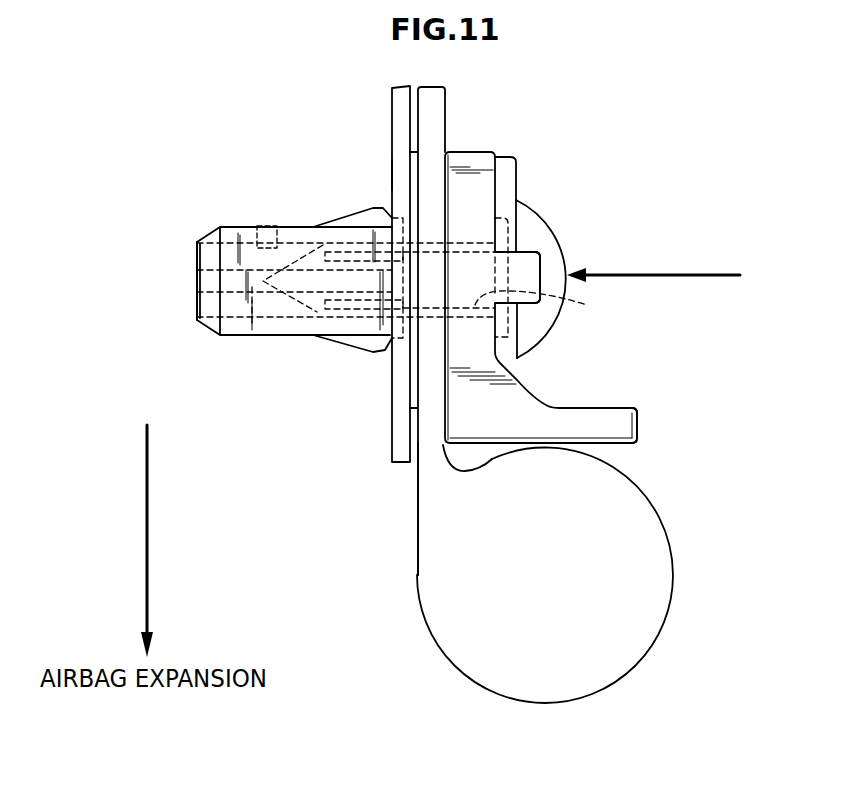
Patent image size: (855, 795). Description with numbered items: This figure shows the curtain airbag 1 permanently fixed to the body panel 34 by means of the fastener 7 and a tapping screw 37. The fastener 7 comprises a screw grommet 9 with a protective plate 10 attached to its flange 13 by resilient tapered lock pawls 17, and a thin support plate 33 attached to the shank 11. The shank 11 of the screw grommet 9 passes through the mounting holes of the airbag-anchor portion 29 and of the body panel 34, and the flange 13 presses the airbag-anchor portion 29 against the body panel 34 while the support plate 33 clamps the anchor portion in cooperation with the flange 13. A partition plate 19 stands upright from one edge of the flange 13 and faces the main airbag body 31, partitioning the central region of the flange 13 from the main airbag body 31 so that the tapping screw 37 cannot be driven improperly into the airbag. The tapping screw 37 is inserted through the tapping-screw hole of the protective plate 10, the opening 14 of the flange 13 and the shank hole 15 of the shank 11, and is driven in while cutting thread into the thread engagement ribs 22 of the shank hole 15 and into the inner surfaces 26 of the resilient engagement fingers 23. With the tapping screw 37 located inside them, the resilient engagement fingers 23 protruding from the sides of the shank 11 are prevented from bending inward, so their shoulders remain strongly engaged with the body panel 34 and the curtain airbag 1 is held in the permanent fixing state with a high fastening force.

The curtain airbag 1 is at (688, 544).
The fastener 7 is at (632, 335).
The screw grommet 9 is at (550, 268).
The protective plate 10 is at (516, 185).
The shank 11 is at (243, 226).
The flange 13 is at (467, 152).
The opening 14 is at (551, 307).
The shank hole 15 is at (255, 242).
The lock pawl 17 is at (533, 305).
The partition plate 19 is at (638, 425).
The thread engagement rib 22 is at (197, 297).
The resilient engagement finger 23 is at (367, 352).
The inner surface 26 is at (327, 303).
The airbag-anchor portion 29 is at (445, 108).
The main airbag body 31 is at (648, 648).
The support plate 33 is at (410, 162).
The body panel 34 is at (393, 175).
The tapping screw 37 is at (552, 219).